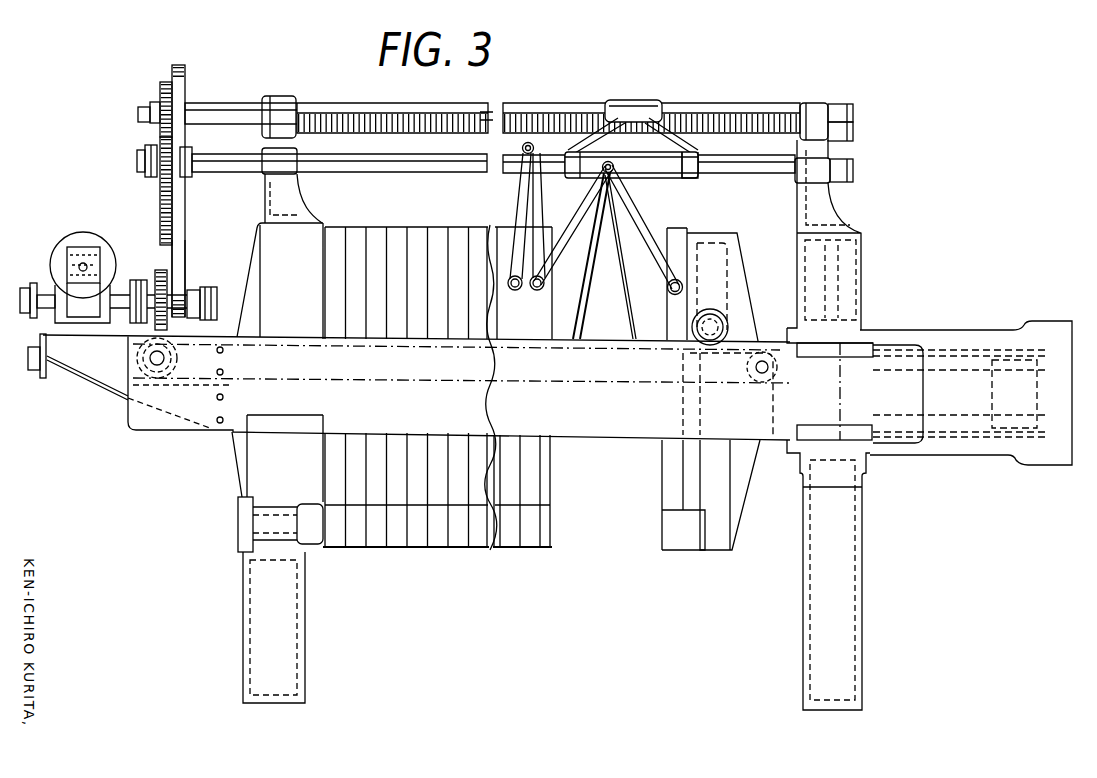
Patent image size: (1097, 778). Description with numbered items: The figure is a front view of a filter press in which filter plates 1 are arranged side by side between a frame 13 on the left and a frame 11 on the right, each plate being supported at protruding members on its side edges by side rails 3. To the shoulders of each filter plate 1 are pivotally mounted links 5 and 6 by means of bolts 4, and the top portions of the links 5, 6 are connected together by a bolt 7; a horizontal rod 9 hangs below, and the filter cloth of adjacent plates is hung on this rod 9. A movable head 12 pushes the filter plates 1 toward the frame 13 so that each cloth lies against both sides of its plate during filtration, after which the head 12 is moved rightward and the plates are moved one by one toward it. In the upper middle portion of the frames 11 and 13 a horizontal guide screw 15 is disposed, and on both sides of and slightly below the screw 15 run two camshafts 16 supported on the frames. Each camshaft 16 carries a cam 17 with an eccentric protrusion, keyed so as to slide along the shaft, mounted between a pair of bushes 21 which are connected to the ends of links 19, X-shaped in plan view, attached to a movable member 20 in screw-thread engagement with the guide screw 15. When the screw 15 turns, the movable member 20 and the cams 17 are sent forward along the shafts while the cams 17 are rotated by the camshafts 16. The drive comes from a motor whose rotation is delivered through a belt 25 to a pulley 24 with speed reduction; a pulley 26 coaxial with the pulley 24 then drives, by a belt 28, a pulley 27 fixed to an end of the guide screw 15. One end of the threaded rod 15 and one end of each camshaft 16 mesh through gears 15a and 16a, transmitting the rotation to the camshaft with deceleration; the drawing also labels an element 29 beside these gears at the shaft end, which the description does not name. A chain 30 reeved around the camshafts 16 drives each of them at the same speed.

The filter plates 1 is at (541, 308).
The side rails 3 is at (614, 339).
The bolts 4 is at (667, 293).
The link 5 is at (654, 246).
The link 6 is at (563, 246).
The bolt 7 is at (522, 148).
The rod 9 is at (608, 196).
The frame 11 is at (855, 292).
The movable head 12 is at (724, 289).
The frame 13 is at (303, 292).
The guide screw 15 is at (540, 104).
The gear 15a is at (160, 90).
The camshafts 16 is at (734, 173).
The gear 16a is at (159, 200).
The cam 17 is at (590, 128).
The links 19 is at (684, 128).
The movable member 20 is at (634, 108).
The bushes 21 is at (700, 150).
The pulley 24 is at (160, 272).
The belt 25 is at (156, 293).
The pulley 26 is at (189, 291).
The pulley 27 is at (186, 77).
The belt 28 is at (179, 263).
The nut 29 is at (137, 160).
The chain 30 is at (146, 147).